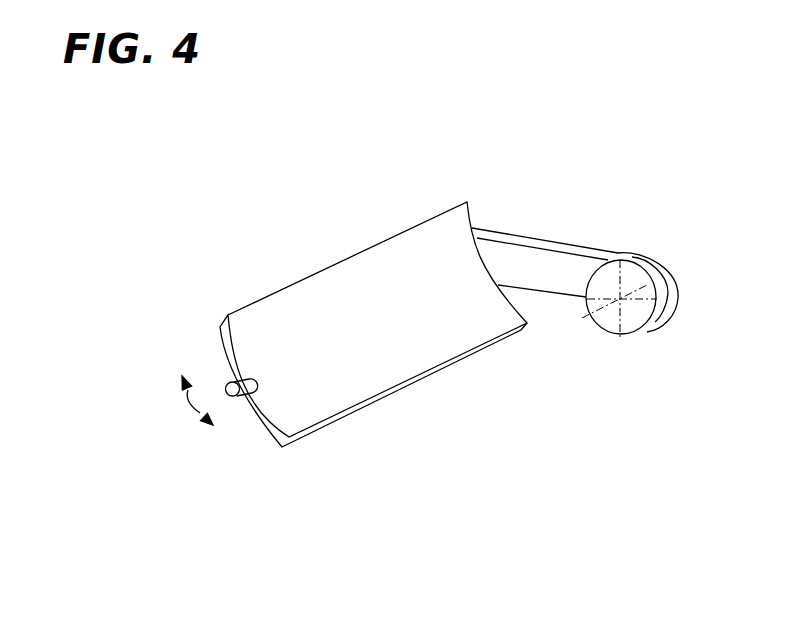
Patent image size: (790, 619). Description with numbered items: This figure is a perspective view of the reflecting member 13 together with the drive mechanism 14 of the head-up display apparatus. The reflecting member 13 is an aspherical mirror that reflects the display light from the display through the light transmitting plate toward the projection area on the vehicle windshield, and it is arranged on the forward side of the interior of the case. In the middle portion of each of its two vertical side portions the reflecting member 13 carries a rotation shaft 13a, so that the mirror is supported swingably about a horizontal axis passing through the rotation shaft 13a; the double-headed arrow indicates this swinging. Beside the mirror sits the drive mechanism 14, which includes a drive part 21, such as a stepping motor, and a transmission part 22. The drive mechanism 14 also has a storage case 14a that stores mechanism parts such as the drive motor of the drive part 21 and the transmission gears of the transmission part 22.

The reflecting member 13 is at (280, 290).
The rotation shaft 13a is at (226, 386).
The drive mechanism 14 is at (607, 241).
The storage case 14a is at (553, 240).
The drive part 21 is at (629, 334).
The transmission part 22 is at (553, 288).